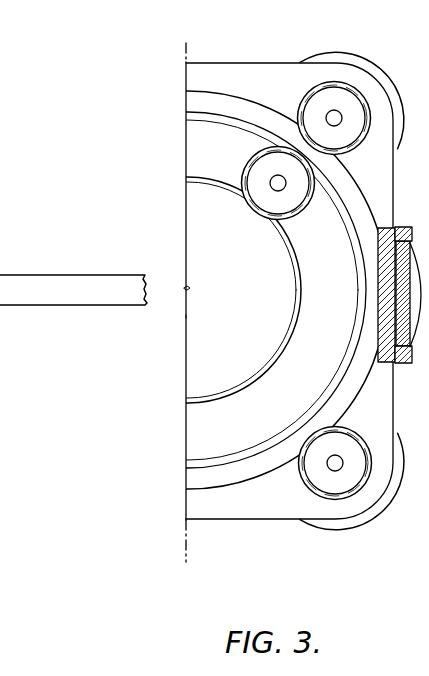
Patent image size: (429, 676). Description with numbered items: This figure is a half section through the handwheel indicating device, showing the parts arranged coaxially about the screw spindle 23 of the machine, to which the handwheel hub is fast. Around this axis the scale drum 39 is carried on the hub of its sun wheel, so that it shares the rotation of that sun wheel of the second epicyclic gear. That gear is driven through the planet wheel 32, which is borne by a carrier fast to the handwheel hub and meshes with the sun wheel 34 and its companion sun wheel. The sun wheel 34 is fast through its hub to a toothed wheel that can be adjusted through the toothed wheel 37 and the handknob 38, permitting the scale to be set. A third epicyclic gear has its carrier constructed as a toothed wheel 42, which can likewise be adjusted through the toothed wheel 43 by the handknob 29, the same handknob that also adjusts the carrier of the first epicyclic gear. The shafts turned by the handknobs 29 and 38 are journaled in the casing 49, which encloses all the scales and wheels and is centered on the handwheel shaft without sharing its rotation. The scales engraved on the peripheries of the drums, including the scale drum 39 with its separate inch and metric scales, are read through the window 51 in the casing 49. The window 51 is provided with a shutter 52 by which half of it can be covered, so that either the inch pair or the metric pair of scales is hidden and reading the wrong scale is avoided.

The screw spindle 23 is at (26, 290).
The handknob 29 is at (323, 525).
The planet wheel 32 is at (249, 170).
The sun wheel 34 is at (201, 353).
The toothed wheel 37 is at (316, 103).
The handknob 38 is at (335, 56).
The scale drum 39 is at (187, 467).
The toothed wheel 42 is at (207, 477).
The toothed wheel 43 is at (313, 476).
The casing 49 is at (198, 521).
The window 51 is at (383, 311).
The shutter 52 is at (418, 314).